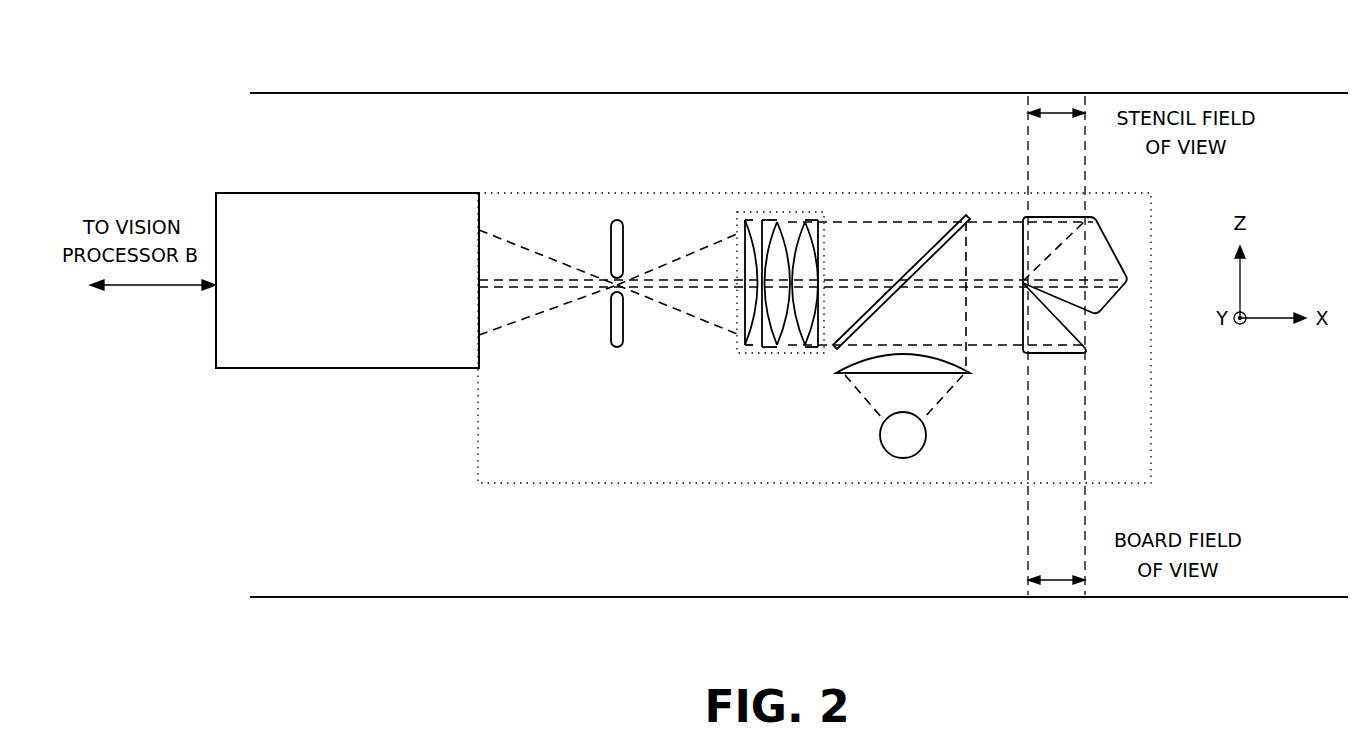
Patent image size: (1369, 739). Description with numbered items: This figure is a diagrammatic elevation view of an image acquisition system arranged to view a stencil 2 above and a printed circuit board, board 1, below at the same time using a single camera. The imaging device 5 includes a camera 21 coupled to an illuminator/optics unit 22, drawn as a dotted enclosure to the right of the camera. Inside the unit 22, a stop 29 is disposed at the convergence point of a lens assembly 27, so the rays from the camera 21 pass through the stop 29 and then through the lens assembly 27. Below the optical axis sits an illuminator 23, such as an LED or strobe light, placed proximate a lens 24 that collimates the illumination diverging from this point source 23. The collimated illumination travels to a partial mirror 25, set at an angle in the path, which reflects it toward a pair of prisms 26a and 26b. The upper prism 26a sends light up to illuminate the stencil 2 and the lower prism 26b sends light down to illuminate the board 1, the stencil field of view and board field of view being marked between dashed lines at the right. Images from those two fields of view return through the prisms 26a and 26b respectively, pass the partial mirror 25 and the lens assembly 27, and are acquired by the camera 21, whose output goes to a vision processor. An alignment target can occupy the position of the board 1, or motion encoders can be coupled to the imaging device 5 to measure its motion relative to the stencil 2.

The board 1 is at (545, 597).
The stencil 2 is at (606, 93).
The imaging device 5 is at (428, 466).
The camera 21 is at (420, 206).
The illuminator/optics unit 22 is at (563, 192).
The illuminator 23 is at (900, 445).
The lens 24 is at (868, 372).
The partial mirror 25 is at (927, 250).
The prism 26a is at (1107, 265).
The prism 26b is at (1067, 338).
The lens assembly 27 is at (798, 212).
The stop 29 is at (612, 347).